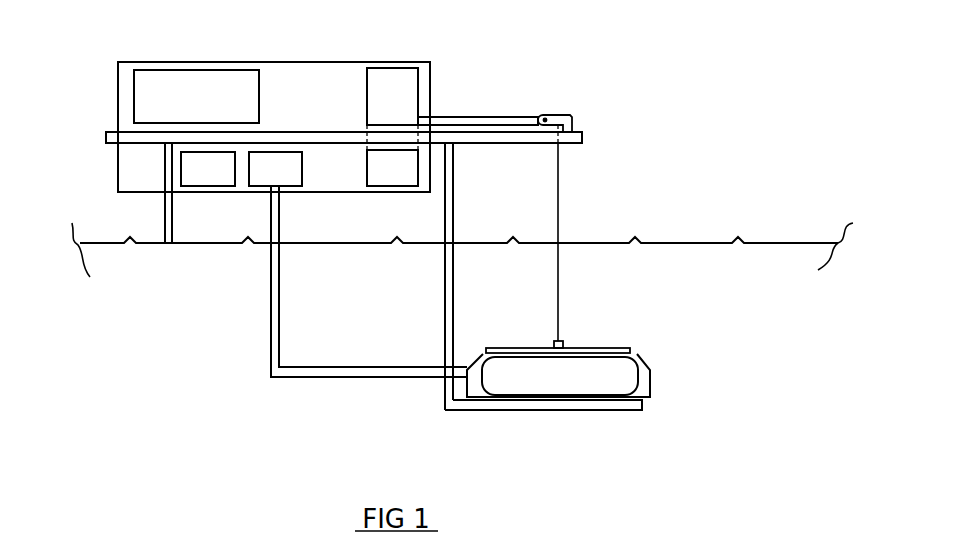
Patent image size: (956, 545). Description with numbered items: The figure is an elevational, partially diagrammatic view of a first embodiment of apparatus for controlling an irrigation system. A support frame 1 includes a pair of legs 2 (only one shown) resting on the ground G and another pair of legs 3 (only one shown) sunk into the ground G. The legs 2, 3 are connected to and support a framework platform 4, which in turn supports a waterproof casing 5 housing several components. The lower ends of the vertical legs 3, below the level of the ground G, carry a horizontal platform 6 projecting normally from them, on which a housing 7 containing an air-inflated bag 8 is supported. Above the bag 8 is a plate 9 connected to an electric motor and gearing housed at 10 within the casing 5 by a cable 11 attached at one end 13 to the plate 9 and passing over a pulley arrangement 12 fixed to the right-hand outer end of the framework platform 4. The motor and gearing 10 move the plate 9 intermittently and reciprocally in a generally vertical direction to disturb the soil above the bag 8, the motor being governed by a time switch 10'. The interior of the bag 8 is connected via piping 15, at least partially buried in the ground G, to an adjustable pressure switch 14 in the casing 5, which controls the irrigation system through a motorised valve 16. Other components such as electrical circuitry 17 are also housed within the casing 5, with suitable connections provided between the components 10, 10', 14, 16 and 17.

The support frame 1 is at (300, 112).
The legs 2 is at (168, 220).
The legs 3 is at (447, 310).
The framework platform 4 is at (312, 138).
The waterproof casing 5 is at (117, 102).
The horizontal platform 6 is at (533, 405).
The housing 7 is at (653, 375).
The air-inflated bag 8 is at (485, 385).
The plate 9 is at (587, 349).
The electric motor and gearing 10 is at (392, 96).
The time switch 10' is at (392, 168).
The cable 11 is at (465, 115).
The pulley arrangement 12 is at (559, 115).
The cable end 13 is at (553, 345).
The adjustable pressure switch 14 is at (263, 182).
The piping 15 is at (293, 378).
The motorised valve 16 is at (196, 182).
The electrical circuitry 17 is at (180, 110).
The ground G is at (750, 267).